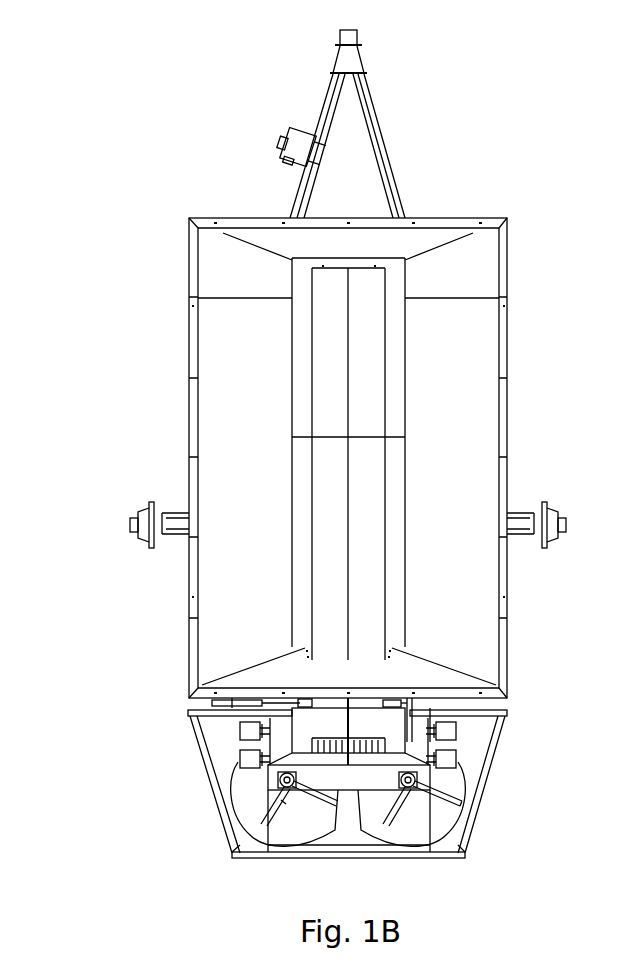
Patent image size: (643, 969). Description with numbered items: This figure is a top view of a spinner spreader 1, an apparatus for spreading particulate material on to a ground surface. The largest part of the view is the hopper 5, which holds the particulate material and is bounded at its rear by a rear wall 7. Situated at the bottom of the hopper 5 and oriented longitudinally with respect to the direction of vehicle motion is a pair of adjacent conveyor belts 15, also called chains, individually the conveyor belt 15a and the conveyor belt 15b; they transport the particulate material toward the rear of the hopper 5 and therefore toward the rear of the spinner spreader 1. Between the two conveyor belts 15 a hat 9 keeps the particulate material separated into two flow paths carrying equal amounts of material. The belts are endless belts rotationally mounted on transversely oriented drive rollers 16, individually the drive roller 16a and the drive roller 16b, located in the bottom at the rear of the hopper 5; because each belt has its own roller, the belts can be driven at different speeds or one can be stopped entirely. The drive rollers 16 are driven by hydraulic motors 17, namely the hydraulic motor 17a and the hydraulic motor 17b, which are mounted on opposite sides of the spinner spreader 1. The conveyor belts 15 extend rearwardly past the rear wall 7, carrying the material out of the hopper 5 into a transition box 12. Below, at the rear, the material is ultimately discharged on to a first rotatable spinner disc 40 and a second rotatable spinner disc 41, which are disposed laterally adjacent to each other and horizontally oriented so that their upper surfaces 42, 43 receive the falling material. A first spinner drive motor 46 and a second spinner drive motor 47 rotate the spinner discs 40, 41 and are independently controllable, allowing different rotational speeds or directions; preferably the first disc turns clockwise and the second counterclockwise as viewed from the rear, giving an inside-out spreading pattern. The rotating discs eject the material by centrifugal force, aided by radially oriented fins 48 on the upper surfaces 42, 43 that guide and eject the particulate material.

The spinner spreader 1 is at (600, 275).
The hopper 5 is at (505, 403).
The rear wall 7 is at (507, 705).
The hat 9 is at (348, 724).
The transition box 12 is at (320, 717).
The conveyor belts 15 is at (346, 459).
The conveyor belt 15a is at (330, 352).
The conveyor belt 15b is at (368, 352).
The drive rollers 16 is at (341, 824).
The drive roller 16a is at (308, 748).
The drive roller 16b is at (392, 750).
The hydraulic motors 17 is at (343, 739).
The hydraulic motor 17a is at (240, 731).
The hydraulic motor 17b is at (456, 731).
The first rotatable spinner disc 40 is at (247, 812).
The second rotatable spinner disc 41 is at (442, 822).
The upper surface 42 is at (288, 828).
The upper surface 43 is at (413, 832).
The first spinner drive motor 46 is at (290, 790).
The second spinner drive motor 47 is at (408, 790).
The fins 48 is at (460, 805).